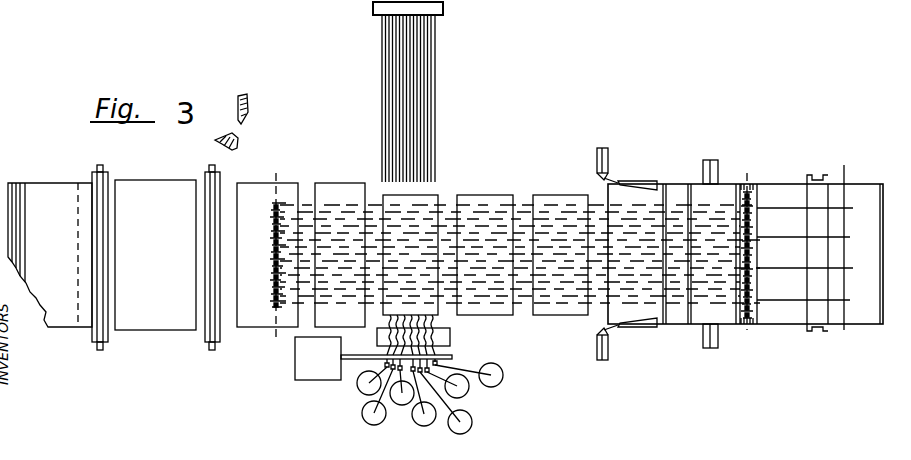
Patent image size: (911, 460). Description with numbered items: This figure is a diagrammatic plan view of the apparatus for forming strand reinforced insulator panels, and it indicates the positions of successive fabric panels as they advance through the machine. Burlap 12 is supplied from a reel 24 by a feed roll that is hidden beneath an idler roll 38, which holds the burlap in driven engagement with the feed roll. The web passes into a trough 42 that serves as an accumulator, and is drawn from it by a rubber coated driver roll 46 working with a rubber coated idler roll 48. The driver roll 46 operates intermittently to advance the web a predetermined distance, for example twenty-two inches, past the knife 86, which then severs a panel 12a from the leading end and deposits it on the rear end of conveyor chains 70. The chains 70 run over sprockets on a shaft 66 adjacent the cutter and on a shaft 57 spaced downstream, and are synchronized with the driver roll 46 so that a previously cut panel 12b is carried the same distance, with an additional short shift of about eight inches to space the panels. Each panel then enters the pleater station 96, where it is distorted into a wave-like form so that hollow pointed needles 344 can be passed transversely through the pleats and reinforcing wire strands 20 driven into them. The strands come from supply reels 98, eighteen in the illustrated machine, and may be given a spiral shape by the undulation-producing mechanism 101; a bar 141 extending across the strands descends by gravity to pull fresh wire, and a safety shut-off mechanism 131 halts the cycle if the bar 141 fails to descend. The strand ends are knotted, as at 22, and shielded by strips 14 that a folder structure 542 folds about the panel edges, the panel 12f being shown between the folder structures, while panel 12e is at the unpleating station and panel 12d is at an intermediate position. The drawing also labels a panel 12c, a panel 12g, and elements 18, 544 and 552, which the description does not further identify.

The strips 14 is at (57, 2).
The knotted strand ends 22 is at (84, 0).
The burlap 12 is at (156, 4).
The take-up section 18 is at (572, 0).
The reel 24 is at (33, 183).
The idler roll 38 is at (92, 227).
The trough 42 is at (146, 330).
The rubber coated idler roll 48 is at (215, 342).
The rubber coated driver roll 46 is at (243, 270).
The knife 86 is at (245, 98).
The cut panel 12a is at (248, 183).
The previously cut panel 12b is at (325, 183).
The third processing station 12c is at (437, 195).
The panel in intermediate position 12d is at (488, 195).
The panel at unpleating station 12e is at (550, 195).
The panel between folder structures 12f is at (607, 318).
The seventh processing station 12g is at (726, 310).
The shaft 66 is at (265, 256).
The conveyor chains 70 is at (262, 215).
The pleater station 96 is at (430, 268).
The hollow pointed needles 344 is at (433, 80).
The undulation-producing mechanism 101 is at (378, 338).
The reinforcing wire strands 20 is at (450, 334).
The safety shut-off mechanism 131 is at (300, 380).
The bar 141 is at (452, 357).
The supply reels 98 is at (500, 383).
The guide nozzle 544 is at (614, 147).
The folder structure 542 is at (645, 183).
The shaft 57 is at (744, 184).
The sprocket 552 is at (748, 186).